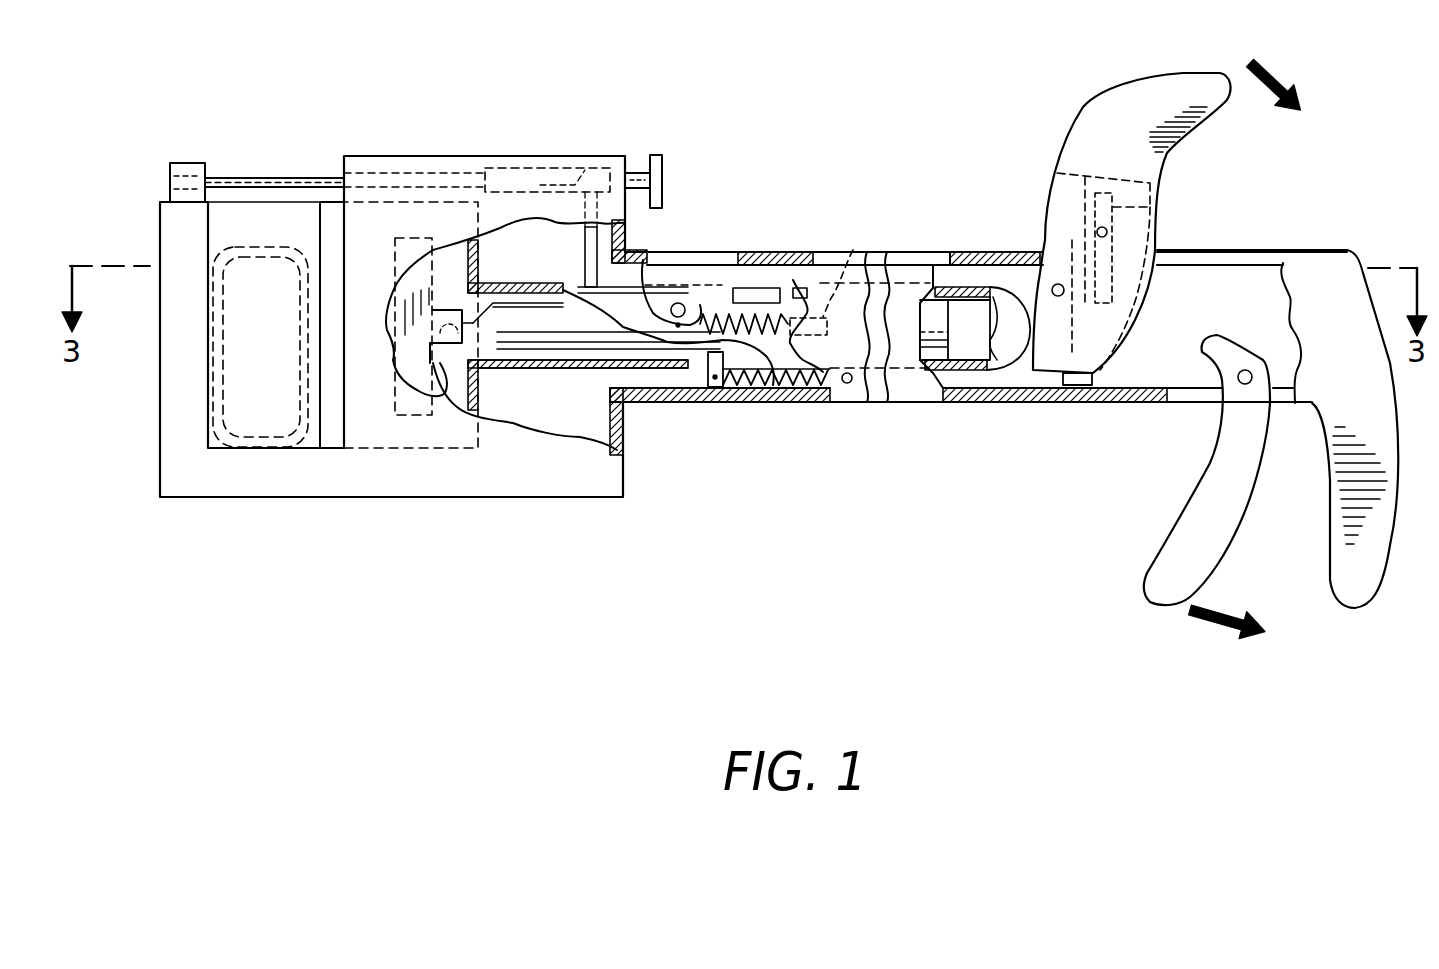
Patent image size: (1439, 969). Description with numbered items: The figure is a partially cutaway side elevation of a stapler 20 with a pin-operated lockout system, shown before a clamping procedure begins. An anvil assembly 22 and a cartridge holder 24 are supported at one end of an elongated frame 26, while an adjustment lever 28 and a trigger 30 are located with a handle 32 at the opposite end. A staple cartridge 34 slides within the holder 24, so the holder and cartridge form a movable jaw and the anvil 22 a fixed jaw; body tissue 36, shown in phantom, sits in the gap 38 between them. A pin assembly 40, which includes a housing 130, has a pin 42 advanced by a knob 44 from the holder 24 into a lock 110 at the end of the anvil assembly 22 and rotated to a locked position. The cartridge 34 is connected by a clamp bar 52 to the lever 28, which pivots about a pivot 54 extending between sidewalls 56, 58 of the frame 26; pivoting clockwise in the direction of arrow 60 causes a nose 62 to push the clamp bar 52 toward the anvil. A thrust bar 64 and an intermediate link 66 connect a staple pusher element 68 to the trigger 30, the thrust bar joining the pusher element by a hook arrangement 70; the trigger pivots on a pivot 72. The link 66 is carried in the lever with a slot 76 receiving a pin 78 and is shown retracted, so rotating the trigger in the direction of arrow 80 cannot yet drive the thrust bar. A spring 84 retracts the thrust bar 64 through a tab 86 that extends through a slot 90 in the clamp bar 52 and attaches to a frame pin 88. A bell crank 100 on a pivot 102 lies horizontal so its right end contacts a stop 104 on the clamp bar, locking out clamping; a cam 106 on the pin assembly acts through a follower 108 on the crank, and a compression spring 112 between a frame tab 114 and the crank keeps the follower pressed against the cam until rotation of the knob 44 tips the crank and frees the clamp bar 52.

The stapler 20 is at (550, 136).
The anvil assembly 22 is at (160, 425).
The cartridge holder 24 is at (380, 156).
The elongated frame 26 is at (780, 416).
The adjustment lever 28 is at (1135, 93).
The trigger 30 is at (1180, 530).
The handle 32 is at (1330, 510).
The staple cartridge 34 is at (320, 240).
The body tissue 36 is at (250, 437).
The gap 38 is at (233, 222).
The pin assembly 40 is at (508, 156).
The pin 42 is at (273, 173).
The knob 44 is at (663, 168).
The clamp bar 52 is at (553, 370).
The pivot 54 is at (1058, 284).
The sidewall 56 is at (1230, 285).
The sidewall 58 is at (1307, 270).
The arrow 60 is at (1270, 63).
The nose 62 is at (1035, 370).
The thrust bar 64 is at (587, 337).
The intermediate link 66 is at (1053, 172).
The staple pusher element 68 is at (440, 375).
The hook arrangement 70 is at (478, 357).
The pivot 72 is at (1233, 420).
The slot 76 is at (1155, 202).
The pin 78 is at (1108, 232).
The arrow 80 is at (1203, 617).
The spring 84 is at (748, 387).
The tab 86 is at (705, 380).
The pin 88 is at (847, 383).
The slot 90 is at (653, 360).
The bell crank 100 is at (763, 293).
The pivot 102 is at (682, 307).
The stop 104 is at (800, 287).
The cam 106 is at (577, 182).
The follower 108 is at (633, 228).
The lock 110 is at (170, 173).
The compression spring 112 is at (717, 313).
The tab 114 is at (853, 250).
The housing 130 is at (527, 156).